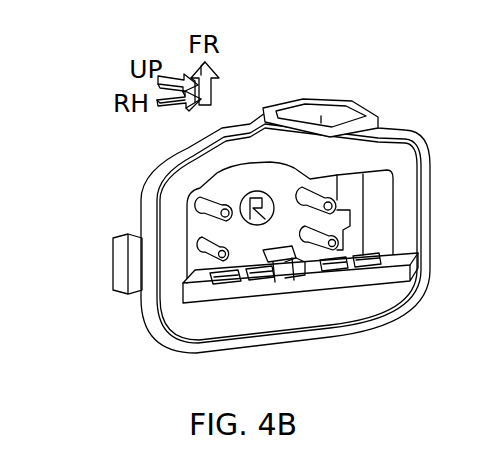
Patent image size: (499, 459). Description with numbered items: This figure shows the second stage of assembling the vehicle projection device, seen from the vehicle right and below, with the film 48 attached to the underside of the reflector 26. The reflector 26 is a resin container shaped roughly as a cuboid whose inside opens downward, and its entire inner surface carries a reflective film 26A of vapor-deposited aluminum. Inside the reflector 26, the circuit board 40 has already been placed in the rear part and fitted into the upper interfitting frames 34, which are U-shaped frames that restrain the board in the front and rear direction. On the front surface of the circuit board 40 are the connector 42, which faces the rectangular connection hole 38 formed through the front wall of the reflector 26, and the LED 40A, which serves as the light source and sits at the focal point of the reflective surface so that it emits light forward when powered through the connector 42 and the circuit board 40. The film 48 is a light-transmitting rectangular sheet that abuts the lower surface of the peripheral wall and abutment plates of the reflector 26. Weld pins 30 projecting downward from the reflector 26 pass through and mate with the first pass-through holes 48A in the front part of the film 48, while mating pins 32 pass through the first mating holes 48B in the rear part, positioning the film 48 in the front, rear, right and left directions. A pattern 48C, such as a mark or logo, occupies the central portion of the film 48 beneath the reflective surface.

The reflector 26 is at (158, 158).
The reflective film 26A is at (385, 170).
The weld pin 30 is at (212, 200).
The mating pin 32 is at (193, 230).
The upper interfitting frame 34 is at (305, 262).
The connection hole 38 is at (330, 117).
The circuit board 40 is at (233, 307).
The LED 40A is at (285, 290).
The connector 42 is at (350, 227).
The film 48 is at (237, 204).
The first pass-through hole 48A is at (307, 188).
The first mating hole 48B is at (193, 268).
The pattern 48C is at (255, 191).